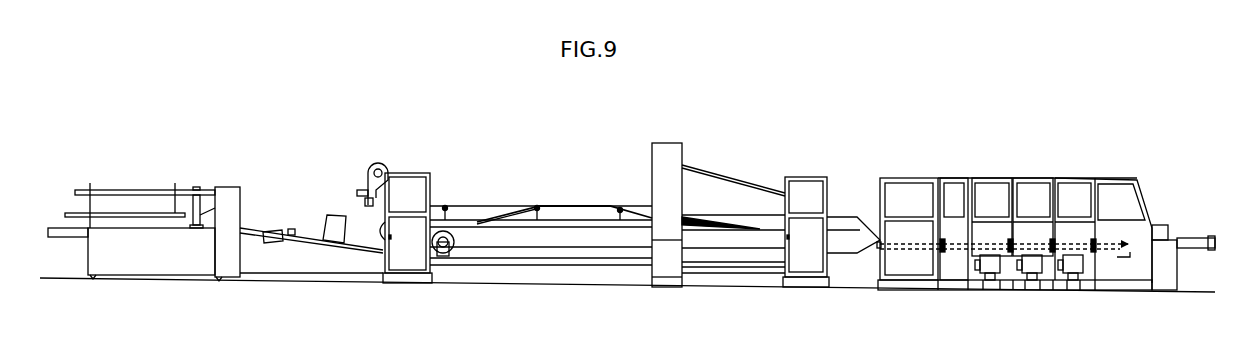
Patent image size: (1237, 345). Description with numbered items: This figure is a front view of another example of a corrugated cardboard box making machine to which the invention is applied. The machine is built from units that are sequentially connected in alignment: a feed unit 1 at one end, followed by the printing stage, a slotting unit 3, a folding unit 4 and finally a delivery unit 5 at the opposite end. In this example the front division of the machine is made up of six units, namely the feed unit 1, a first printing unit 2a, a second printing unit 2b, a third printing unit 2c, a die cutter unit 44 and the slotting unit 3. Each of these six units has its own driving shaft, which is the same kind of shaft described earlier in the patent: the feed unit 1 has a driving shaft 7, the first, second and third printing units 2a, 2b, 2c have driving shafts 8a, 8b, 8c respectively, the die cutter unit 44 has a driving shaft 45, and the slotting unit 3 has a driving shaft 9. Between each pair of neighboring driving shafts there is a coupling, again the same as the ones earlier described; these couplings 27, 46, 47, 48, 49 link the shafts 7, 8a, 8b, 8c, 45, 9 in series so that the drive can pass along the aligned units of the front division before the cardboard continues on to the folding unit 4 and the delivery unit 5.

The feed unit 1 is at (1160, 211).
The first printing unit 2a is at (1085, 175).
The second printing unit 2b is at (1043, 175).
The third printing unit 2c is at (997, 175).
The slotting unit 3 is at (913, 175).
The folding unit 4 is at (548, 201).
The delivery unit 5 is at (150, 188).
The driving shaft 7 is at (1112, 258).
The driving shaft 8a is at (1070, 282).
The driving shaft 8b is at (1030, 282).
The driving shaft 8c is at (988, 281).
The driving shaft 9 is at (915, 252).
The coupling 27 is at (1112, 250).
The die cutter unit 44 is at (953, 175).
The driving shaft 45 is at (953, 252).
The coupling 46 is at (1100, 243).
The coupling 47 is at (1057, 242).
The coupling 48 is at (976, 241).
The coupling 49 is at (945, 241).